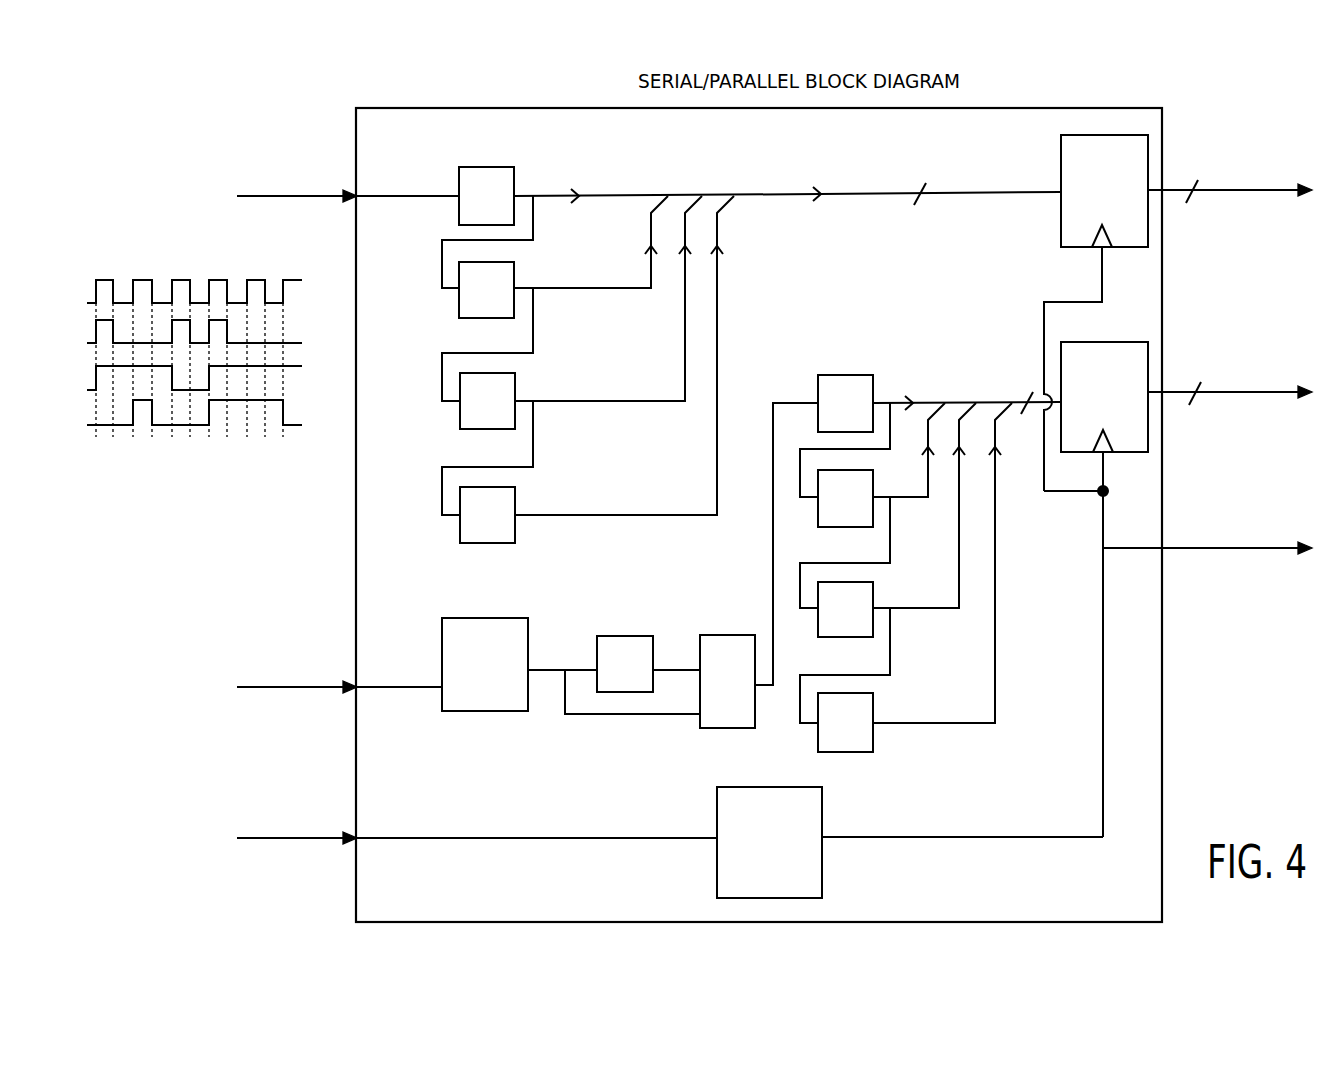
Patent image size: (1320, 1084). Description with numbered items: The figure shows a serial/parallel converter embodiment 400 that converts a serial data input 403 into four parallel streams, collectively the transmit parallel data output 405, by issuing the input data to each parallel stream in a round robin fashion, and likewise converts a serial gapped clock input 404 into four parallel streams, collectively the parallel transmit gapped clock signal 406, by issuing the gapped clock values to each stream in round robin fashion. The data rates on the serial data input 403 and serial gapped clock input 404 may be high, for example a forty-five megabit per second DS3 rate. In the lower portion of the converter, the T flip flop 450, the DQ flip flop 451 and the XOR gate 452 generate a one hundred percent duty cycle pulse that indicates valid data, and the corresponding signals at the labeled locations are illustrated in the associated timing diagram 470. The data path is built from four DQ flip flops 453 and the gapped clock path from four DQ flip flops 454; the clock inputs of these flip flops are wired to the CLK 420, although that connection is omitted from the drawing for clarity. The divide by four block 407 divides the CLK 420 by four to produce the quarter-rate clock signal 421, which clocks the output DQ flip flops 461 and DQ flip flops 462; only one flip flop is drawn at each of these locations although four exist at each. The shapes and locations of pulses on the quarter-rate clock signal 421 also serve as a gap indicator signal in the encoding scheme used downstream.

The serial/parallel converter embodiment 400 is at (558, 72).
The serial data input 403 is at (310, 194).
The serial gapped clock input 404 is at (270, 690).
The transmit parallel data output 405 is at (1248, 193).
The parallel transmit gapped clock signal 406 is at (1248, 395).
The divide by four block 407 is at (760, 792).
The CLK 420 is at (270, 843).
The CLK/4 signal 421 is at (1232, 550).
The T flip flop 450 is at (496, 712).
The DQ flip flop 451 is at (620, 636).
The XOR gate 452 is at (713, 730).
The DQ flip flops 453 is at (538, 172).
The DQ flip flops 454 is at (872, 706).
The DQ flip flops 461 is at (1063, 224).
The DQ flip flops 462 is at (1062, 348).
The timing diagram 470 is at (193, 472).